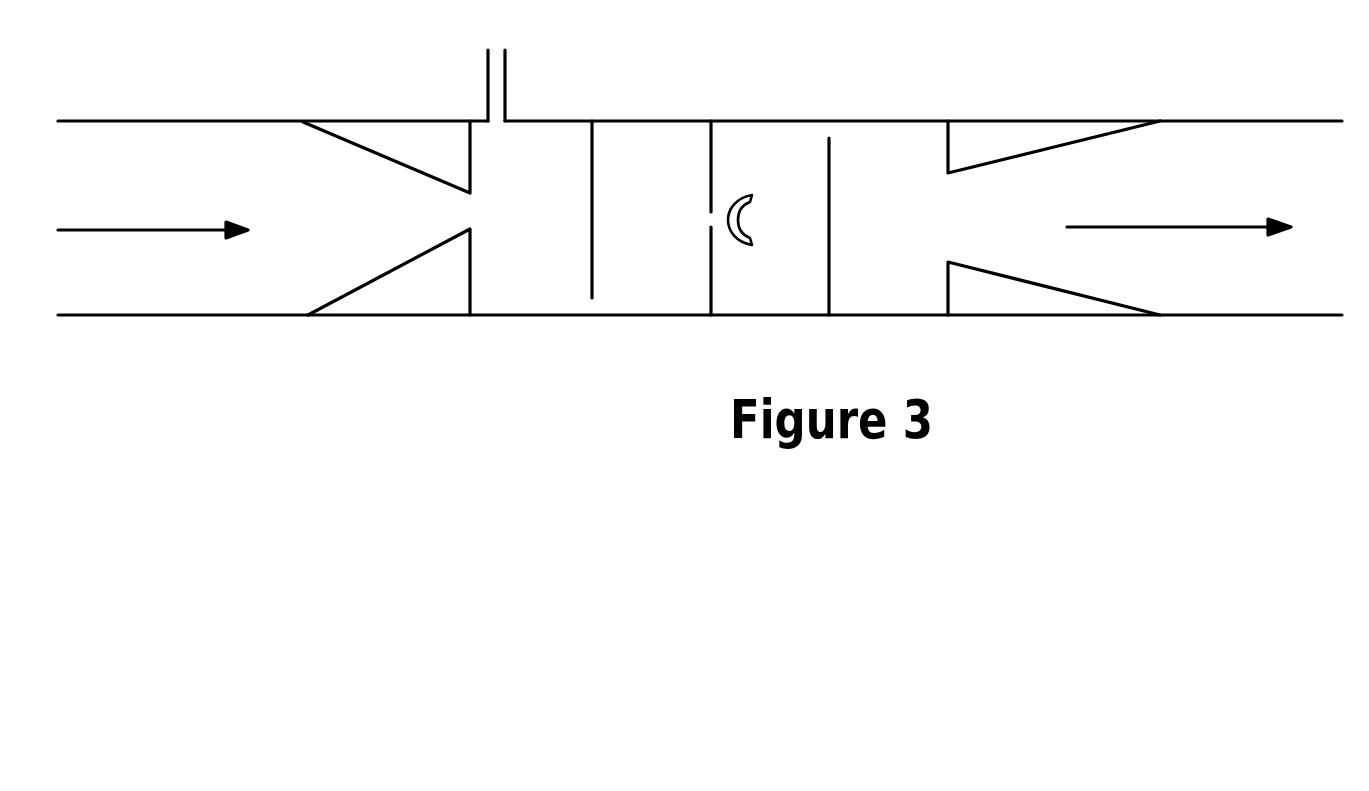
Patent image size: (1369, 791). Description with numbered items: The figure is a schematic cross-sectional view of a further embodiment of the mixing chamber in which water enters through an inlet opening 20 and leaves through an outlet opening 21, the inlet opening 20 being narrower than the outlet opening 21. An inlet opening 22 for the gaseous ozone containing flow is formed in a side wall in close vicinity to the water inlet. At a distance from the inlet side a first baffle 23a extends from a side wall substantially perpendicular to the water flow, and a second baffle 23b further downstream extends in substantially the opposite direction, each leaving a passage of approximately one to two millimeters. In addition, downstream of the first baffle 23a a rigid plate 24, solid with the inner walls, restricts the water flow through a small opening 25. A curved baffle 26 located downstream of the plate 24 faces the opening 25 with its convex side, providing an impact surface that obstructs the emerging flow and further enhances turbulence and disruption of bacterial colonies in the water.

The inlet opening 20 is at (386, 218).
The outlet opening 21 is at (1054, 218).
The inlet opening for the gaseous ozone containing flow 22 is at (535, 85).
The first baffle 23a is at (573, 209).
The second baffle 23b is at (868, 226).
The rigid plate 24 is at (686, 270).
The small opening 25 is at (686, 166).
The curved baffle 26 is at (757, 200).